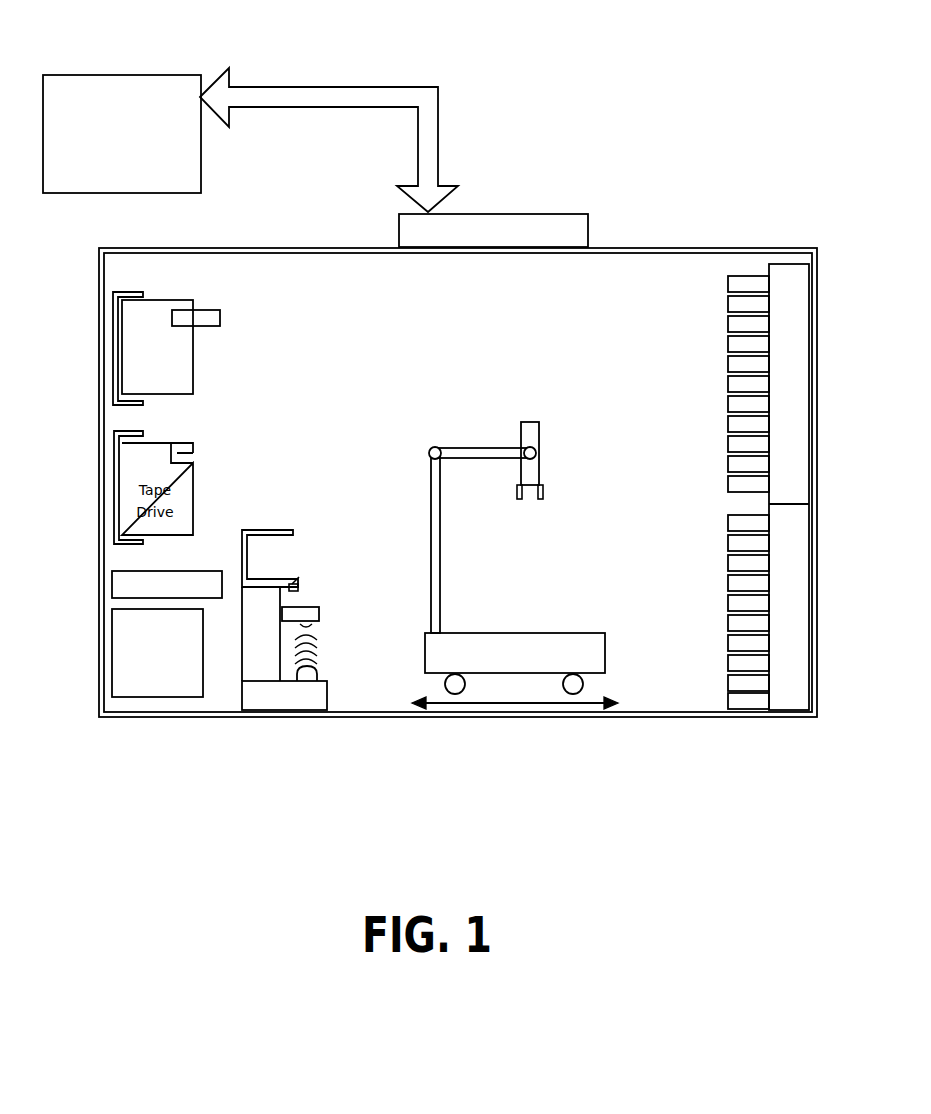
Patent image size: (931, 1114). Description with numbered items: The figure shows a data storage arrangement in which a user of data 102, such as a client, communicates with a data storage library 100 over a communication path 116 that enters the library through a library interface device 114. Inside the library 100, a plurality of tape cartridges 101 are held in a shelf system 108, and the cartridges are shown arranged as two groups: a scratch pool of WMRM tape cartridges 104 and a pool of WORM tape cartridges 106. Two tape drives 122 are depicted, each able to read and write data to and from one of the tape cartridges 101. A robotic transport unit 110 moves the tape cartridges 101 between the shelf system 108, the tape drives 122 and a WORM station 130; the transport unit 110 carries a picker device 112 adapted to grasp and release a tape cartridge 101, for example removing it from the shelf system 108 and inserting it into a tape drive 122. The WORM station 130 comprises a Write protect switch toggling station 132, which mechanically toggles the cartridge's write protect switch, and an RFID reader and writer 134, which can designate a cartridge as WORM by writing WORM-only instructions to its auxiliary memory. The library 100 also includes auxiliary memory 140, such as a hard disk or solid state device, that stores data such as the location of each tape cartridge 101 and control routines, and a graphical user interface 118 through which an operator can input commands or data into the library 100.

The data storage library 100 is at (692, 196).
The tape cartridge 101 is at (200, 326).
The user of data 102 is at (118, 75).
The scratch pool of WMRM tape cartridges 104 is at (708, 276).
The pool of WORM tape cartridges 106 is at (708, 515).
The shelf system 108 is at (791, 263).
The robotic transport unit 110 is at (515, 565).
The picker device 112 is at (540, 476).
The library interface device 114 is at (473, 213).
The communication path 116 is at (440, 147).
The graphical user interface 118 is at (112, 680).
The tape drive 122 is at (160, 300).
The WORM station 130 is at (320, 572).
The Write protect switch toggling station 132 is at (302, 562).
The RFID reader and writer 134 is at (318, 675).
The auxiliary memory 140 is at (112, 587).